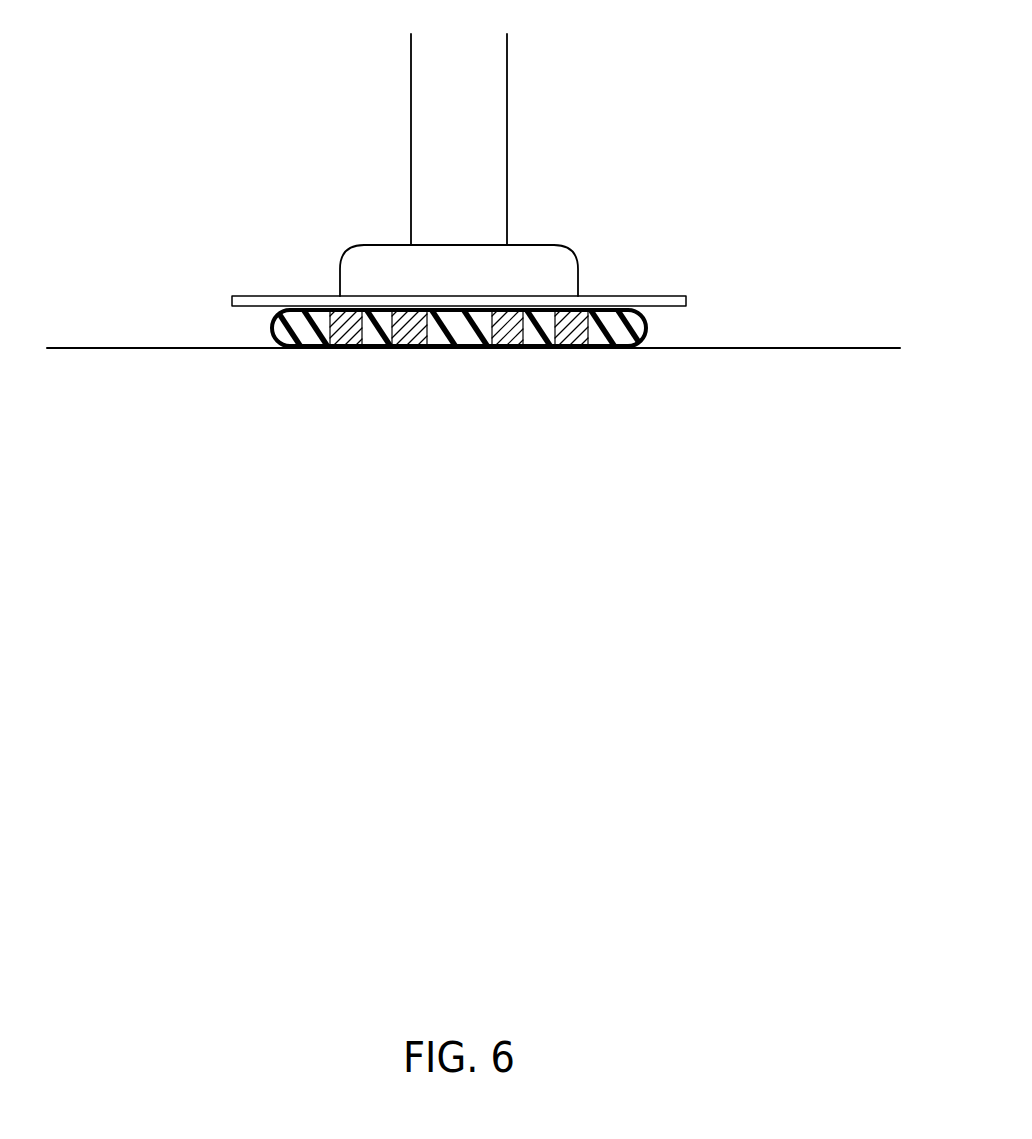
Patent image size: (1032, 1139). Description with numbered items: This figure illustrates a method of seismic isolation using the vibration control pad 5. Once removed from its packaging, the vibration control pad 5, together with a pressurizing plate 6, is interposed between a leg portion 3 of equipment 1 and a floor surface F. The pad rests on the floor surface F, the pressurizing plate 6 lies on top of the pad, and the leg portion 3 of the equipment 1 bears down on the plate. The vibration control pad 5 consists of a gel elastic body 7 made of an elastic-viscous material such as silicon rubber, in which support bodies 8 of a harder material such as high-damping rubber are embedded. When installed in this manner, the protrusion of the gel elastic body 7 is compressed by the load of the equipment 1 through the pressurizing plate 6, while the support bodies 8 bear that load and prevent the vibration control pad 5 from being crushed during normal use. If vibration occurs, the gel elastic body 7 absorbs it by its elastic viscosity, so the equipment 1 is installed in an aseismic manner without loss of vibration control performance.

The equipment 1 is at (476, 162).
The leg portion 3 is at (435, 130).
The vibration control pad 5 is at (393, 349).
The pressurizing plate 6 is at (646, 297).
The gel elastic body 7 is at (452, 340).
The support bodies 8 is at (342, 340).
The floor surface F is at (770, 348).